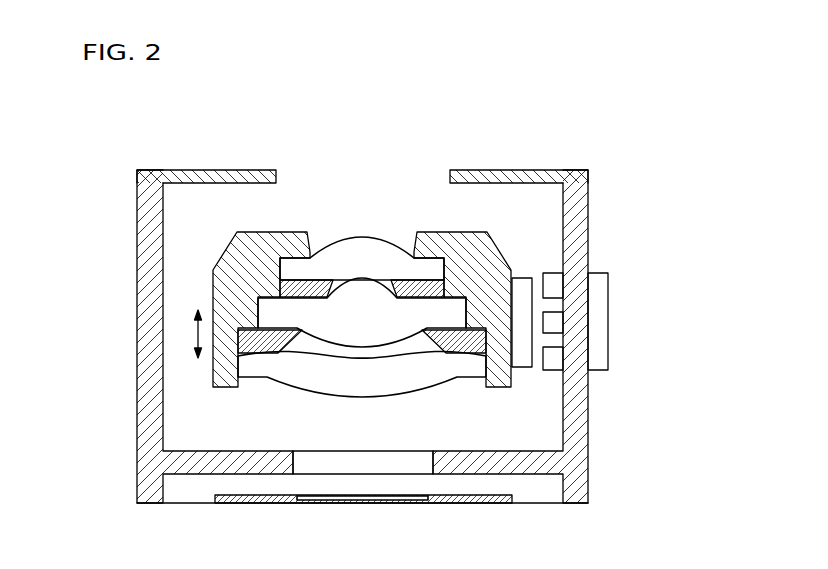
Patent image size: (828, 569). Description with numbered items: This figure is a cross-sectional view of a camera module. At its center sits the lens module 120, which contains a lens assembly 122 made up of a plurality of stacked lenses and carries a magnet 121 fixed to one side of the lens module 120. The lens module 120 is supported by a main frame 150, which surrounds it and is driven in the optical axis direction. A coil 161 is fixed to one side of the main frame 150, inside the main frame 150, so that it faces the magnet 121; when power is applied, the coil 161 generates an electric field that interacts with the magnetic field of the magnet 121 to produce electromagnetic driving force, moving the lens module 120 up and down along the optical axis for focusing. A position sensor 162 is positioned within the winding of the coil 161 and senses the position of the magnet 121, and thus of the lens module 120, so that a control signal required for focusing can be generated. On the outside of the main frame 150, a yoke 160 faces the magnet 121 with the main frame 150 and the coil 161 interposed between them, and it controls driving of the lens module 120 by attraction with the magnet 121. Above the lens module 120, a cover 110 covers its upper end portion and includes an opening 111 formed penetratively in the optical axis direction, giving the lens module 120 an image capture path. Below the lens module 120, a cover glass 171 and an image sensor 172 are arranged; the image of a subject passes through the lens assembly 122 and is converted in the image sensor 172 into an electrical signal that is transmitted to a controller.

The cover 110 is at (533, 173).
The opening 111 is at (277, 178).
The lens module 120 is at (303, 354).
The magnet 121 is at (523, 368).
The lens assembly 122 is at (362, 249).
The main frame 150 is at (150, 352).
The yoke 160 is at (612, 292).
The coil 161 is at (553, 286).
The position sensor 162 is at (553, 322).
The cover glass 171 is at (367, 463).
The image sensor 172 is at (263, 503).